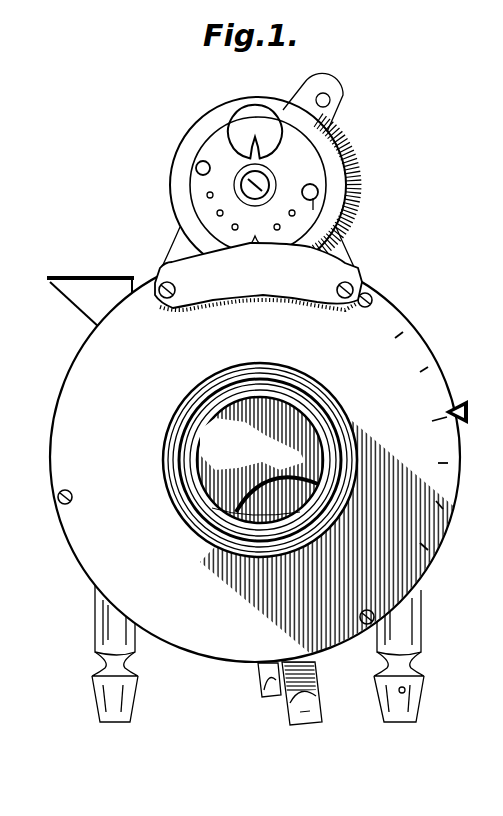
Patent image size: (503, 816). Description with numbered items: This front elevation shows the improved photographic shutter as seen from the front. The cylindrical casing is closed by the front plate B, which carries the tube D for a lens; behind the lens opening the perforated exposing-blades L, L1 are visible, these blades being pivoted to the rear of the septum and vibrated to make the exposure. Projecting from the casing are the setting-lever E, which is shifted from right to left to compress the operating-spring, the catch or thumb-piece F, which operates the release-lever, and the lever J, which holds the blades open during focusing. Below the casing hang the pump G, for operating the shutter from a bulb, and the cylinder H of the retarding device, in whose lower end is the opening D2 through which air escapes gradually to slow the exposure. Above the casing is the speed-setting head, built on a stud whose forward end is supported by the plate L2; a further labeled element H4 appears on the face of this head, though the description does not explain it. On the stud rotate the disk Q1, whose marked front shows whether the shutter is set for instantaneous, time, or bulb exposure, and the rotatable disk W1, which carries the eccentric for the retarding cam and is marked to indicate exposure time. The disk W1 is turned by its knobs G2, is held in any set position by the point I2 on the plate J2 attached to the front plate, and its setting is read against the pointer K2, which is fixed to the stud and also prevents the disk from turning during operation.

The disk Q1 is at (197, 134).
The pointer K2 is at (253, 148).
The knobs G2 is at (352, 163).
The pin hole H4 is at (207, 196).
The plate L2 is at (217, 214).
The setting-lever E is at (333, 100).
The rotatable disk W1 is at (314, 204).
The catch or thumb-piece F is at (103, 278).
The point I2 is at (257, 236).
The plate J2 is at (256, 279).
The front plate B is at (260, 476).
The tube D is at (285, 378).
The perforated exposing-blade L is at (225, 450).
The perforated exposing-blade L1 is at (245, 512).
The pump G is at (138, 690).
The cylinder H is at (426, 618).
The lever J is at (260, 683).
The opening D2 is at (406, 690).